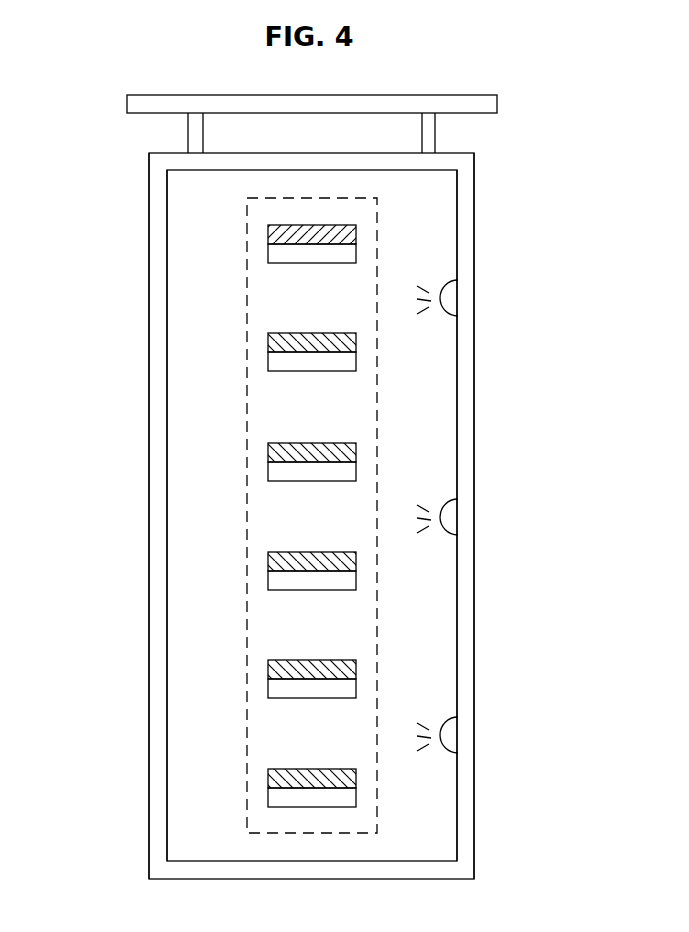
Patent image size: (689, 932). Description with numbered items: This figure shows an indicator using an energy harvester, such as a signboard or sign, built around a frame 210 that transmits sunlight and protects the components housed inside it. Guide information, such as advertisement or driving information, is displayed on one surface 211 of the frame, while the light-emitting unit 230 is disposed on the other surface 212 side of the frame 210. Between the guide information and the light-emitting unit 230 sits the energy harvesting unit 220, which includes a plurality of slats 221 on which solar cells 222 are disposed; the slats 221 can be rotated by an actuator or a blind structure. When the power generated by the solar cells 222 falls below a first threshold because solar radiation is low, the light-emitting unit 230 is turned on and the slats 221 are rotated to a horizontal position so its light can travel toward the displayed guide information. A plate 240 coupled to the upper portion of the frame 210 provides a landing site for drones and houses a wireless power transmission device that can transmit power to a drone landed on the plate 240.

The frame 210 is at (450, 153).
The one surface 211 is at (149, 639).
The other surface 212 is at (475, 632).
The energy harvesting unit 220 is at (378, 422).
The slat 221 is at (268, 362).
The solar cell 222 is at (280, 333).
The light-emitting unit 230 is at (449, 282).
The plate 240 is at (128, 104).